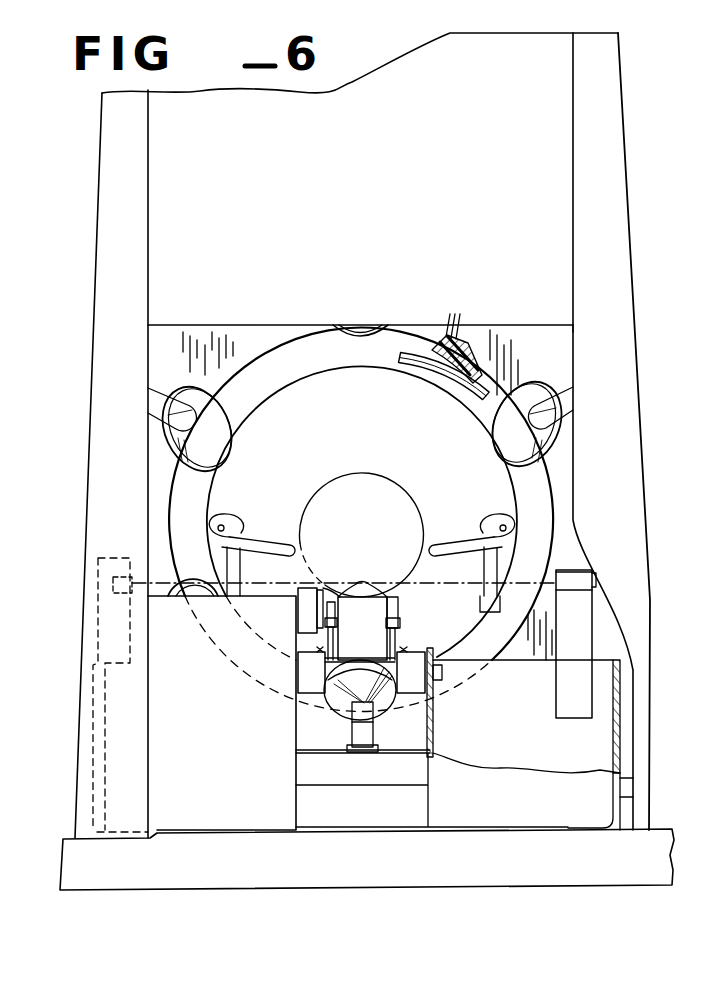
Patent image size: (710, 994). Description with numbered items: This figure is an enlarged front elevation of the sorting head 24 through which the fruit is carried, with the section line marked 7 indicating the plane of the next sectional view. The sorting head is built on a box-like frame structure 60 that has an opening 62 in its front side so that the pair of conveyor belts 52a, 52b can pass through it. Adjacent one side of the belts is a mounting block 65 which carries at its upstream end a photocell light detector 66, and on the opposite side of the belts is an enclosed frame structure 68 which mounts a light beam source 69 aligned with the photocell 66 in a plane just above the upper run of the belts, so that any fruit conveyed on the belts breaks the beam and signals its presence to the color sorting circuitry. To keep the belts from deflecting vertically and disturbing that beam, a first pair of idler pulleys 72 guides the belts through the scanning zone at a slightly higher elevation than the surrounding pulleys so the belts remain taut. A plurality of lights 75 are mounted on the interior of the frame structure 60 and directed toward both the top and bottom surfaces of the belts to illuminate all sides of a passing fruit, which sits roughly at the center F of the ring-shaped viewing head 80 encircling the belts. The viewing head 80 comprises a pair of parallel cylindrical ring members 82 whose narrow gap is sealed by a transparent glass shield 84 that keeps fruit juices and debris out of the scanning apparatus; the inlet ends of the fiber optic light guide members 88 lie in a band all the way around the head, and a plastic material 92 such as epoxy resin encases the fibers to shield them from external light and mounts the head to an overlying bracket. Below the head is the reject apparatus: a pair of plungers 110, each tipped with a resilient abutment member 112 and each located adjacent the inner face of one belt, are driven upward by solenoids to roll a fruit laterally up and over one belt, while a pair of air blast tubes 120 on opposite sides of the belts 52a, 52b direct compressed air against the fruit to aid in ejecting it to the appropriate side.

The sorting head 24 is at (637, 164).
The section line 7- 7 is at (363, 67).
The box-like frame structure 60 is at (370, 152).
The opening 62 is at (573, 330).
The viewing head 80 is at (337, 369).
The cylindrical ring members 82 is at (360, 362).
The fabric / workpiece center F is at (330, 480).
The transparent glass shield 84 is at (412, 372).
The plastic material 92 is at (480, 352).
The fiber optic light guide members 88 is at (447, 316).
The lights 75 is at (360, 324).
The air blast tubes 120 is at (228, 517).
The enclosed frame structure 68 is at (98, 556).
The light beam source 69 is at (130, 575).
The first pair of idler pulleys 72 is at (300, 610).
The conveyor belt 52b is at (318, 588).
The conveyor belt 52a is at (400, 588).
The plungers 110 is at (334, 643).
The resilient abutment member 112 is at (363, 583).
The mounting block 65 is at (583, 614).
The photocell light detector 66 is at (586, 578).